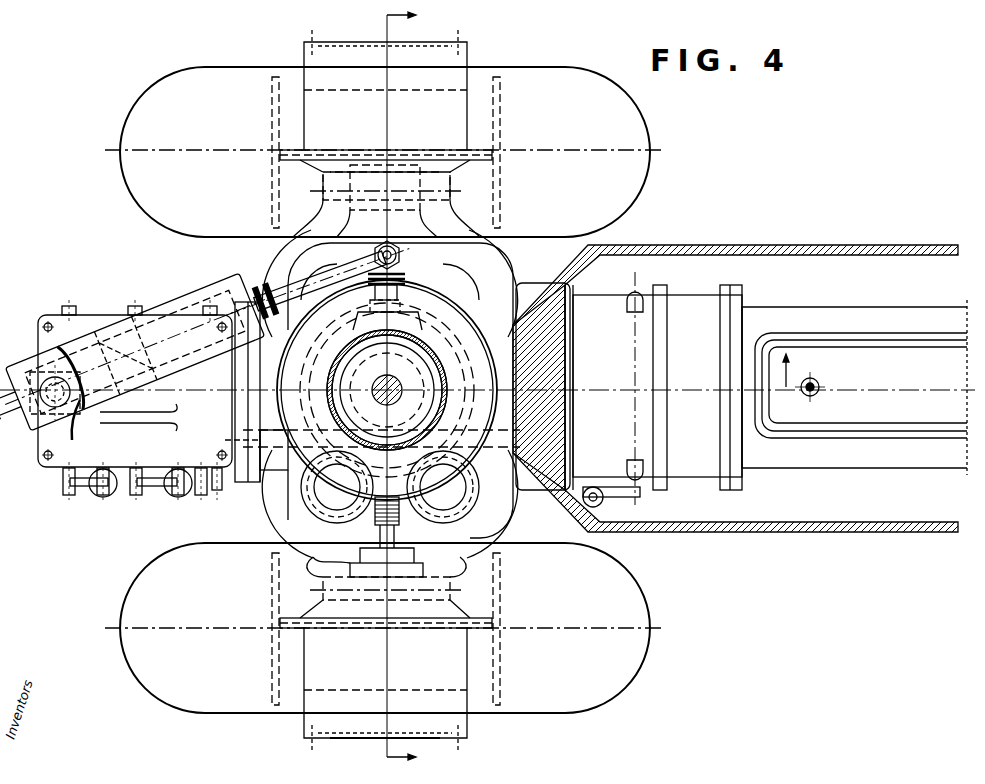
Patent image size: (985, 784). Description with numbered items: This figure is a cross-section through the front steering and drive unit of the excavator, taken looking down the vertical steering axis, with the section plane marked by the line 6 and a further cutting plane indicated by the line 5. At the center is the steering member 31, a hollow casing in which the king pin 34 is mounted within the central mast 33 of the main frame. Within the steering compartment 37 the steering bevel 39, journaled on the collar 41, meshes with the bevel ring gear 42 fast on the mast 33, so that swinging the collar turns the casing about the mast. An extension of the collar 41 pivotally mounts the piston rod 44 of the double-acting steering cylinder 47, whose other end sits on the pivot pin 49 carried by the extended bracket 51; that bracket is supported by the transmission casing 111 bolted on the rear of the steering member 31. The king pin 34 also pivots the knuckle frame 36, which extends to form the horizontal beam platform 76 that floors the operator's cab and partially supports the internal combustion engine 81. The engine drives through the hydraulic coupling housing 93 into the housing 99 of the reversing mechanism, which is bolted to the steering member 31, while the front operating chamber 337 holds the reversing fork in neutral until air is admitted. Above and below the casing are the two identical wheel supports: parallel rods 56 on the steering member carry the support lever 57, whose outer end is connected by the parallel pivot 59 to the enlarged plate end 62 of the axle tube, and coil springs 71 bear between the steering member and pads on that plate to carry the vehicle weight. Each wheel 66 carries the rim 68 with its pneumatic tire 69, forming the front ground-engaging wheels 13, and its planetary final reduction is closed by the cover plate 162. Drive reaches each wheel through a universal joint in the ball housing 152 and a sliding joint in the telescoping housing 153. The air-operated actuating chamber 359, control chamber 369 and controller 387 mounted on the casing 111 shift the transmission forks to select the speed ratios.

The front ground-engaging wheels 13 is at (648, 140).
The ground-engaging pneumatic tire 69 is at (640, 191).
The rim 68 is at (500, 211).
The wheel 66 is at (470, 150).
The cover plate 162 is at (360, 42).
The section line 6- 6 is at (393, 389).
The enlarged plate end 62 is at (372, 165).
The parallel pivot 59 is at (450, 185).
The ball housing 152 is at (425, 562).
The telescoping housing 153 is at (345, 548).
The coil springs 71 is at (292, 515).
The steering compartment 37 is at (505, 281).
The support lever 57 is at (500, 262).
The central mast 33 is at (446, 414).
The bevel ring gear 42 is at (316, 385).
The collar 41 is at (342, 374).
The king pin 34 is at (402, 384).
The steering bevel 39 is at (405, 316).
The piston rod 44 is at (268, 288).
The beam platform 76 is at (858, 246).
The knuckle frame 36 is at (552, 371).
The steering member 31 is at (528, 500).
The housing 99 is at (600, 306).
The housing for a hydraulic coupling 93 is at (697, 482).
The front operating chamber 337 is at (602, 510).
The internal combustion engine 81 is at (858, 309).
The section line 5- 5 is at (800, 383).
The double-acting steering cylinder 47 is at (205, 372).
The extended bracket 51 is at (72, 441).
The casing 111 is at (106, 322).
The pivot pin 49 is at (34, 440).
The parallel rods 56 is at (246, 482).
The actuating chamber 359 is at (98, 497).
The control chamber 369 is at (165, 497).
The controller 387 is at (205, 497).